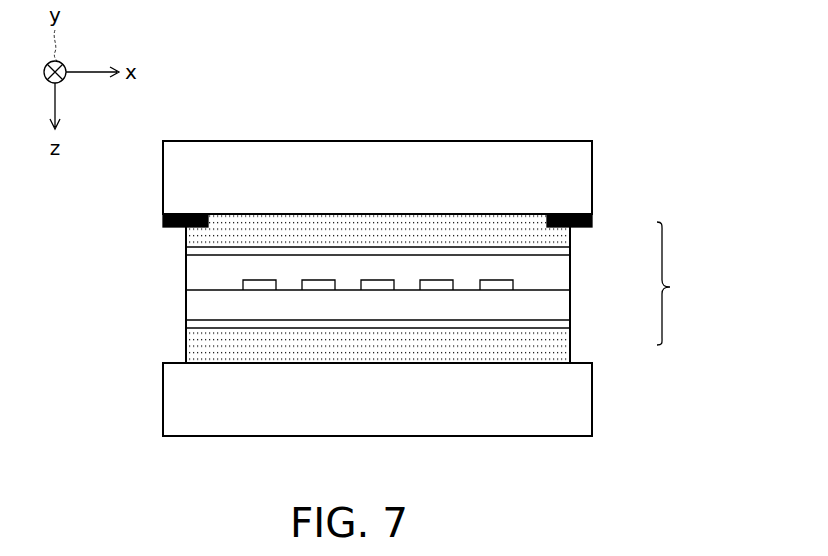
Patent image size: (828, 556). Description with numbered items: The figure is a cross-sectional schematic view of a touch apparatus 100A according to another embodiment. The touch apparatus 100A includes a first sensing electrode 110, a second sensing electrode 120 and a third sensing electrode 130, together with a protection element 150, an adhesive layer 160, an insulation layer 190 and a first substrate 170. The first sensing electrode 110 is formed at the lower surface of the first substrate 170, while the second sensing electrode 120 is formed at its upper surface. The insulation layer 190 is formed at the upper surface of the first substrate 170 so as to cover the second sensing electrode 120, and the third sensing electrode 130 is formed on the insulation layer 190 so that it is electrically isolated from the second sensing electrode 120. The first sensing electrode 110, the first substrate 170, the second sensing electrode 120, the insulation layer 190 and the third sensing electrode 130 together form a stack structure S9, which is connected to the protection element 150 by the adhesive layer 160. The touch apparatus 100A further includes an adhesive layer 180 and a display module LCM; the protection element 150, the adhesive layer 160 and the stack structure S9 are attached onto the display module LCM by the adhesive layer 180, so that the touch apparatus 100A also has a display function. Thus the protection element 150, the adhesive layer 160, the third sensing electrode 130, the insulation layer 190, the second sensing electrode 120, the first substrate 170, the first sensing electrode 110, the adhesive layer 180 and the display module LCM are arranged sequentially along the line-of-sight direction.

The protection element 150 is at (580, 165).
The adhesive layer 160 is at (196, 237).
The adhesive layer 180 is at (196, 350).
The third sensing electrode 130 is at (567, 254).
The insulation layer 190 is at (562, 274).
The second sensing electrode 120 is at (510, 286).
The first substrate 170 is at (558, 307).
The first sensing electrode 110 is at (560, 325).
The stack structure S9 is at (679, 283).
The display module LCM is at (580, 400).
The touch apparatus 100A is at (669, 459).